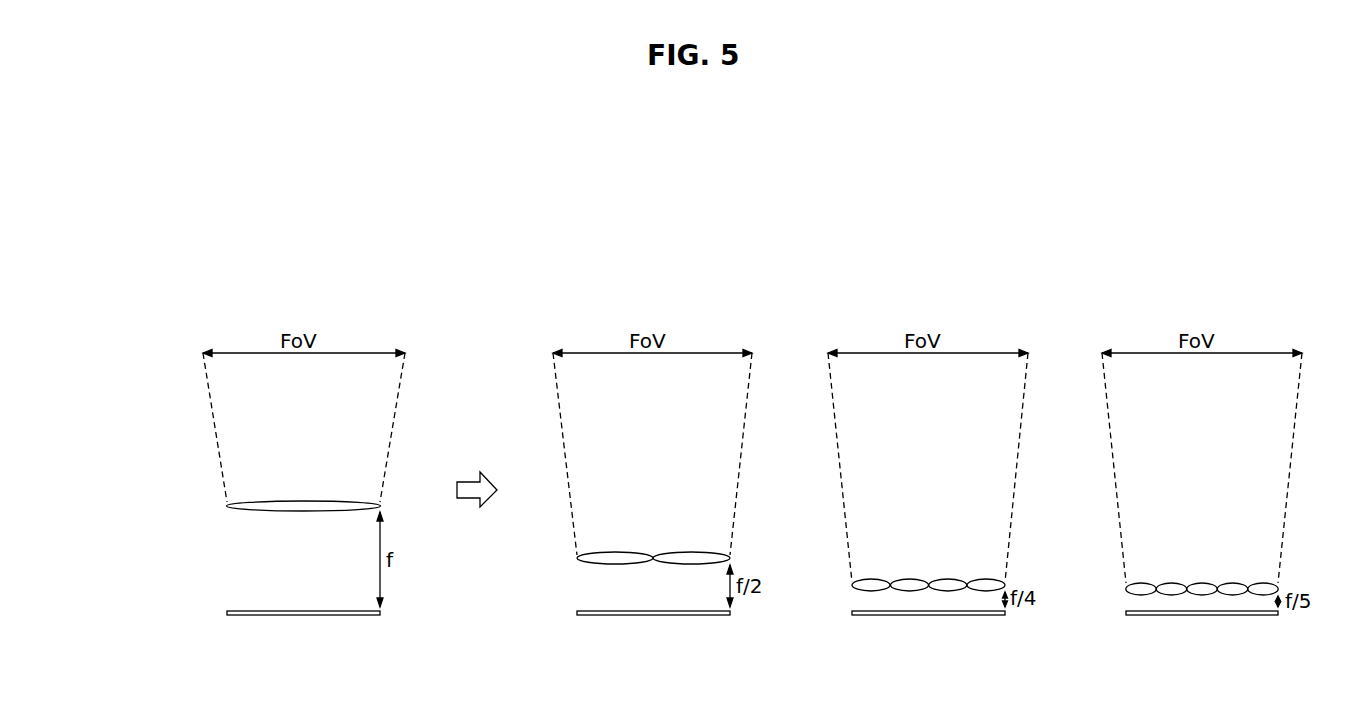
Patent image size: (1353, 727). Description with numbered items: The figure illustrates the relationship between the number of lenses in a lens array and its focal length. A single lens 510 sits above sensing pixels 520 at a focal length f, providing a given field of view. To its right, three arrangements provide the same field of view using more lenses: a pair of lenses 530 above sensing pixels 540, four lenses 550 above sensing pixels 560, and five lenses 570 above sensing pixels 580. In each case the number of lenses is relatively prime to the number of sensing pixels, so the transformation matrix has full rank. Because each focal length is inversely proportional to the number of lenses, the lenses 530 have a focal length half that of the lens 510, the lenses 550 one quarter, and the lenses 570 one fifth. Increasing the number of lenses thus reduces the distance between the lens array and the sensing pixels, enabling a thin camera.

The lens 510 is at (231, 508).
The sensing pixels 520 is at (227, 613).
The lenses 530 is at (577, 562).
The sensing pixels 540 is at (577, 613).
The lenses 550 is at (852, 588).
The sensing pixels 560 is at (852, 613).
The lenses 570 is at (1126, 593).
The sensing pixels 580 is at (1126, 613).